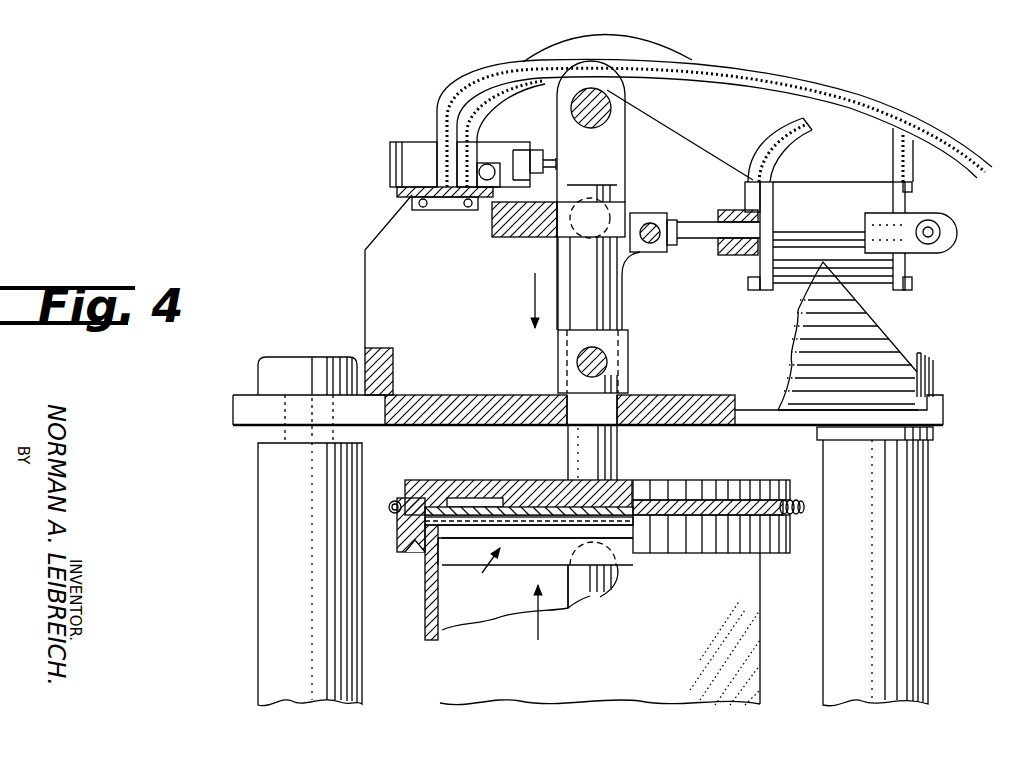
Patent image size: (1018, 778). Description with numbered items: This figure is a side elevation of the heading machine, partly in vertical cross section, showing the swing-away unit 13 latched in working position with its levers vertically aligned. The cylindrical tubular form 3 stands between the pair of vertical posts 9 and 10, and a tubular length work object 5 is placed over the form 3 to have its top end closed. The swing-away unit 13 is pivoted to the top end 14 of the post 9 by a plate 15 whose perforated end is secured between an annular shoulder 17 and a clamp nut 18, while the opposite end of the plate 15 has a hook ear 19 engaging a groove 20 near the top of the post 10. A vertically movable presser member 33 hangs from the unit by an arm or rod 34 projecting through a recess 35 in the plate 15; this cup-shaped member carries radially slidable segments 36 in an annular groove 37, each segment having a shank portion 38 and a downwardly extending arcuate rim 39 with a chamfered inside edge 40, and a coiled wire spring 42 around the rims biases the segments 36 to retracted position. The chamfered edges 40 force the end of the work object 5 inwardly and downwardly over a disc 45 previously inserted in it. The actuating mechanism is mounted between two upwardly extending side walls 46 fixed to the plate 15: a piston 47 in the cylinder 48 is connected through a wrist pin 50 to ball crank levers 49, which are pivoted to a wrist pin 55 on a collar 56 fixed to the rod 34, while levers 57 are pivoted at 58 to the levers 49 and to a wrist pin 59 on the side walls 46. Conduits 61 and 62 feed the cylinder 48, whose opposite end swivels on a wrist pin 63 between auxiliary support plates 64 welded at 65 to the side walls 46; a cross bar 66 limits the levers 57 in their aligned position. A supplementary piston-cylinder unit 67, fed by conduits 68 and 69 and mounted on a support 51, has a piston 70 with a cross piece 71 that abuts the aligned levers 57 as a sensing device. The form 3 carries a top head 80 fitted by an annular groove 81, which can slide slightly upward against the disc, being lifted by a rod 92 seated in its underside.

The cylindrical tubular form 3 is at (444, 612).
The tubular length work object 5 is at (600, 629).
The vertical post 9 is at (910, 545).
The vertical post 10 is at (276, 548).
The swing-away unit 13 is at (397, 228).
The top end of post 14 is at (922, 352).
The plate 15 is at (473, 394).
The annular shoulder 17 is at (913, 431).
The clamp nut 18 is at (936, 371).
The hook ear 19 is at (242, 408).
The groove 20 is at (282, 433).
The presser member 33 is at (712, 479).
The arm or rod 34 is at (600, 447).
The recess 35 is at (616, 406).
The radially slidable segments 36 is at (410, 541).
The annular groove 37 is at (495, 497).
The shank portion 38 is at (452, 497).
The arcuate rim 39 is at (394, 518).
The chamfered inside edge 40 is at (420, 553).
The coiled wire spring 42 is at (800, 500).
The disc 45 is at (538, 514).
The side walls 46 is at (843, 313).
The piston 47 is at (703, 243).
The cylinder 48 is at (833, 200).
The ball crank levers 49 is at (625, 298).
The wrist pin 50 is at (651, 222).
The support 51 is at (447, 204).
The wrist pin 55 is at (578, 362).
The collar 56 is at (630, 342).
The levers 57 is at (613, 152).
The pivot 58 is at (622, 203).
The wrist pin 59 is at (601, 108).
The conduit 61 is at (786, 136).
The conduit 62 is at (925, 150).
The wrist pin 63 is at (941, 233).
The auxiliary support plates 64 is at (753, 258).
The welding 65 is at (725, 211).
The cross bar 66 is at (512, 238).
The supplementary piston-cylinder unit 67 is at (404, 140).
The conduit 68 is at (455, 103).
The conduit 69 is at (473, 95).
The piston 70 is at (541, 150).
The cross piece 71 is at (555, 163).
The top head 80 is at (535, 567).
The annular groove 81 is at (618, 567).
The rod 92 is at (583, 592).